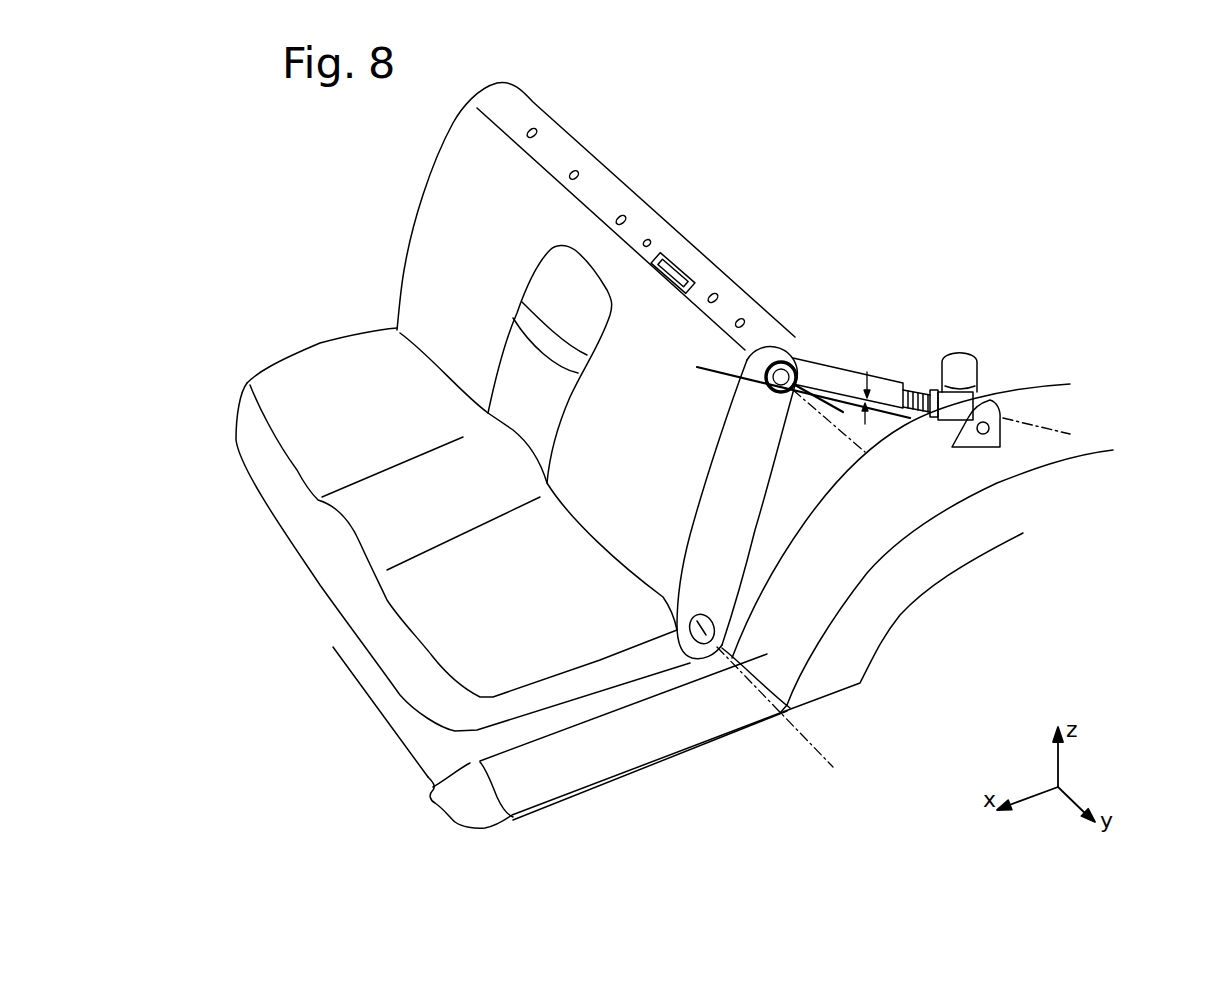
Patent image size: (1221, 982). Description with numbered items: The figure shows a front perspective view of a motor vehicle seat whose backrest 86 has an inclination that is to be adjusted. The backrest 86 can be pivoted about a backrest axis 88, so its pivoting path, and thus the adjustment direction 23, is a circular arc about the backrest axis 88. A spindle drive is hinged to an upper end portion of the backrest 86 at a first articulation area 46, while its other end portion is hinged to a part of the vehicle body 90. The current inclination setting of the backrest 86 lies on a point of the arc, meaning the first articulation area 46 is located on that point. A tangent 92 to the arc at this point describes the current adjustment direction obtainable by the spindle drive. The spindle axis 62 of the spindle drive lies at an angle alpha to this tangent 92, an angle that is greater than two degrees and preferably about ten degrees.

The adjustment direction 23 is at (703, 360).
The first articulation area 46 is at (800, 345).
The spindle axis 62 is at (1033, 417).
The backrest 86 is at (593, 187).
The backrest axis 88 is at (820, 737).
The vehicle body 90 is at (1015, 504).
The tangent 92 is at (745, 363).